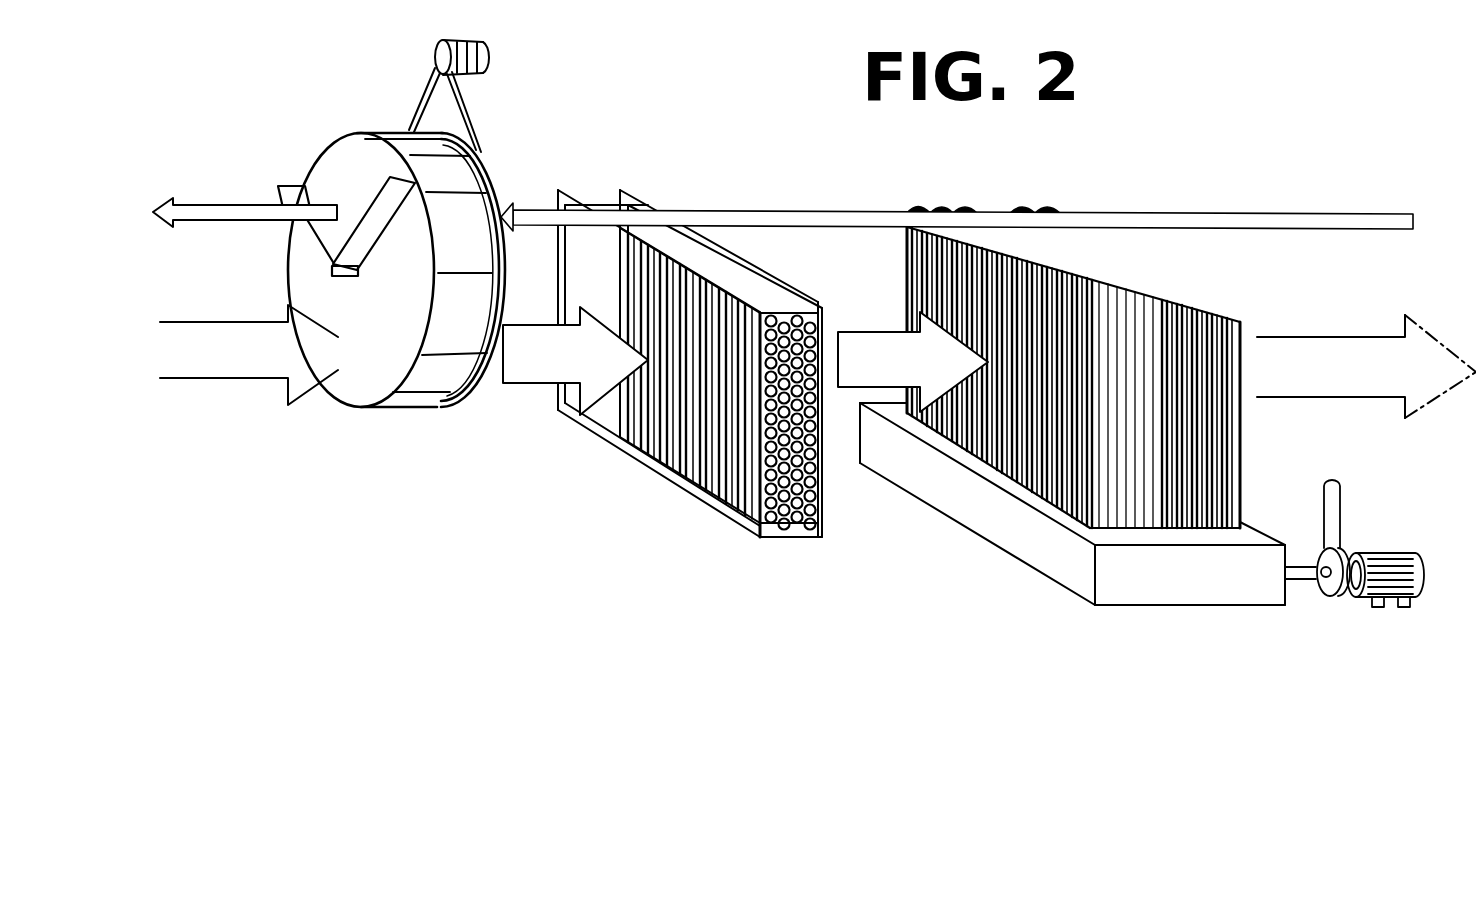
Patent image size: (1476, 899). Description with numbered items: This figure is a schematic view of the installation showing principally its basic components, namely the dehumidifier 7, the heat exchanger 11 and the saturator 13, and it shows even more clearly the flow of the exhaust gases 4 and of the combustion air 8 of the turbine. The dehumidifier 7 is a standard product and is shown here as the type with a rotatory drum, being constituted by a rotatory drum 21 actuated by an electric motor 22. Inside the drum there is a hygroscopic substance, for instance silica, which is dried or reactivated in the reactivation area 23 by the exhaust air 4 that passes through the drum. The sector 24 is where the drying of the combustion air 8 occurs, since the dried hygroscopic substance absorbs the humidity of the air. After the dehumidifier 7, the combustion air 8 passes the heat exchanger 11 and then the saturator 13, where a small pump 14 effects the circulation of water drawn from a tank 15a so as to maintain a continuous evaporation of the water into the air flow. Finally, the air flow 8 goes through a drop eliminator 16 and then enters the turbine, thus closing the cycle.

The exhaust gases 4 is at (777, 212).
The dehumidifier 7 is at (332, 409).
The combustion air 8 is at (236, 368).
The heat exchanger 11 is at (626, 466).
The saturator 13 is at (1010, 484).
The pump 14 is at (1325, 597).
The tank 15a is at (1187, 597).
The drop eliminator 16 is at (1175, 527).
The rotatory drum 21 is at (376, 126).
The electric motor 22 is at (483, 53).
The reactivation area 23 is at (336, 163).
The sector 24 is at (372, 330).